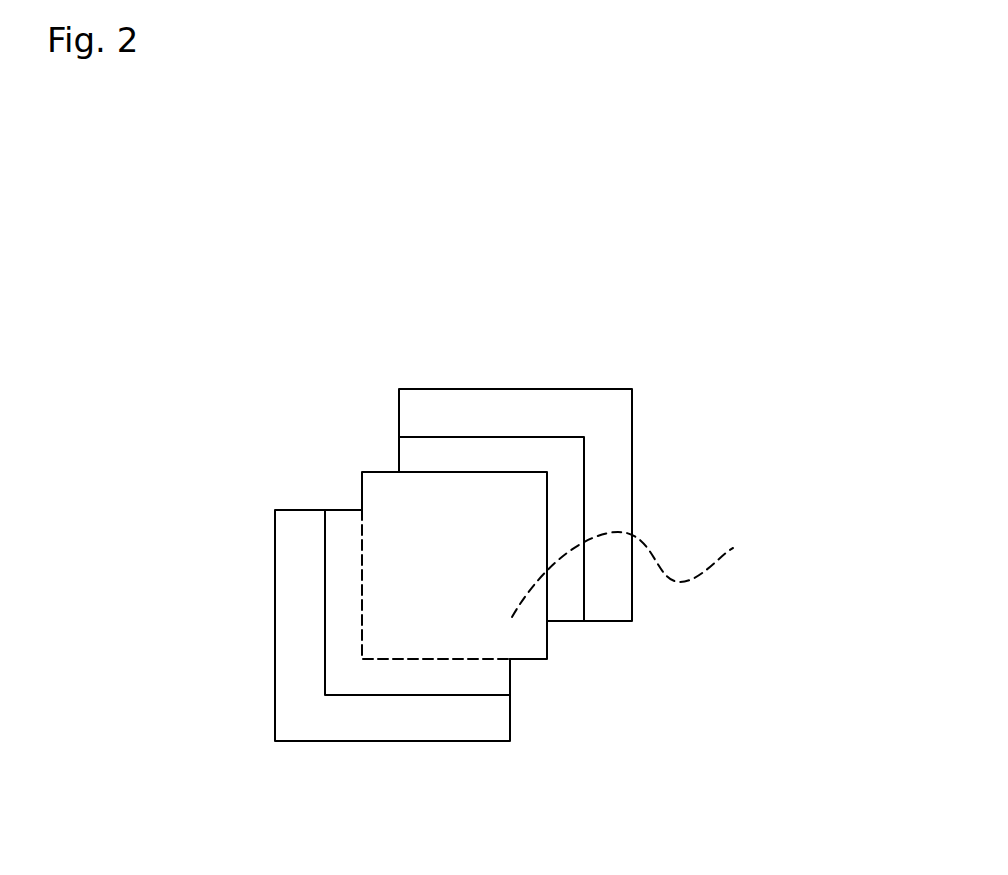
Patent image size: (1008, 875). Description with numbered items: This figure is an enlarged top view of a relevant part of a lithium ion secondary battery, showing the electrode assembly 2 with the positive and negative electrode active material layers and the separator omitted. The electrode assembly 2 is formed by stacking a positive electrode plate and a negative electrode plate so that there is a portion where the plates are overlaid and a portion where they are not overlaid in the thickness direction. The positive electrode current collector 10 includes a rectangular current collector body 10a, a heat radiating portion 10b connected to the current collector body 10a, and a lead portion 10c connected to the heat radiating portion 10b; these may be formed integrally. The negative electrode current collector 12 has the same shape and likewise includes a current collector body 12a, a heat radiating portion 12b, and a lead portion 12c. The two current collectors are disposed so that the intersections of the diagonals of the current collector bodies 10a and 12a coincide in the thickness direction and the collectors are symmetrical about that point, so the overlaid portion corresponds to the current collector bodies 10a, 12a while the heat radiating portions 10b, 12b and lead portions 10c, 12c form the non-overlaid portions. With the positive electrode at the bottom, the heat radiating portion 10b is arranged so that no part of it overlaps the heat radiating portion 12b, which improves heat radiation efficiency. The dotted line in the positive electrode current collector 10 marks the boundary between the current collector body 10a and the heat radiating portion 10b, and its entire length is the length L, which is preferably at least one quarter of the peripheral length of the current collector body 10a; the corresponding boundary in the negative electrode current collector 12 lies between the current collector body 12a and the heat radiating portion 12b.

The electrode assembly 2 is at (558, 276).
The positive electrode current collector 10 is at (820, 367).
The current collector body 10a is at (658, 569).
The heat radiating portion 10b is at (565, 503).
The lead portion 10c is at (612, 428).
The negative electrode current collector 12 is at (125, 450).
The current collector body 12a is at (387, 494).
The heat radiating portion 12b is at (425, 560).
The lead portion 12c is at (298, 620).
The length of the boundary L is at (452, 550).